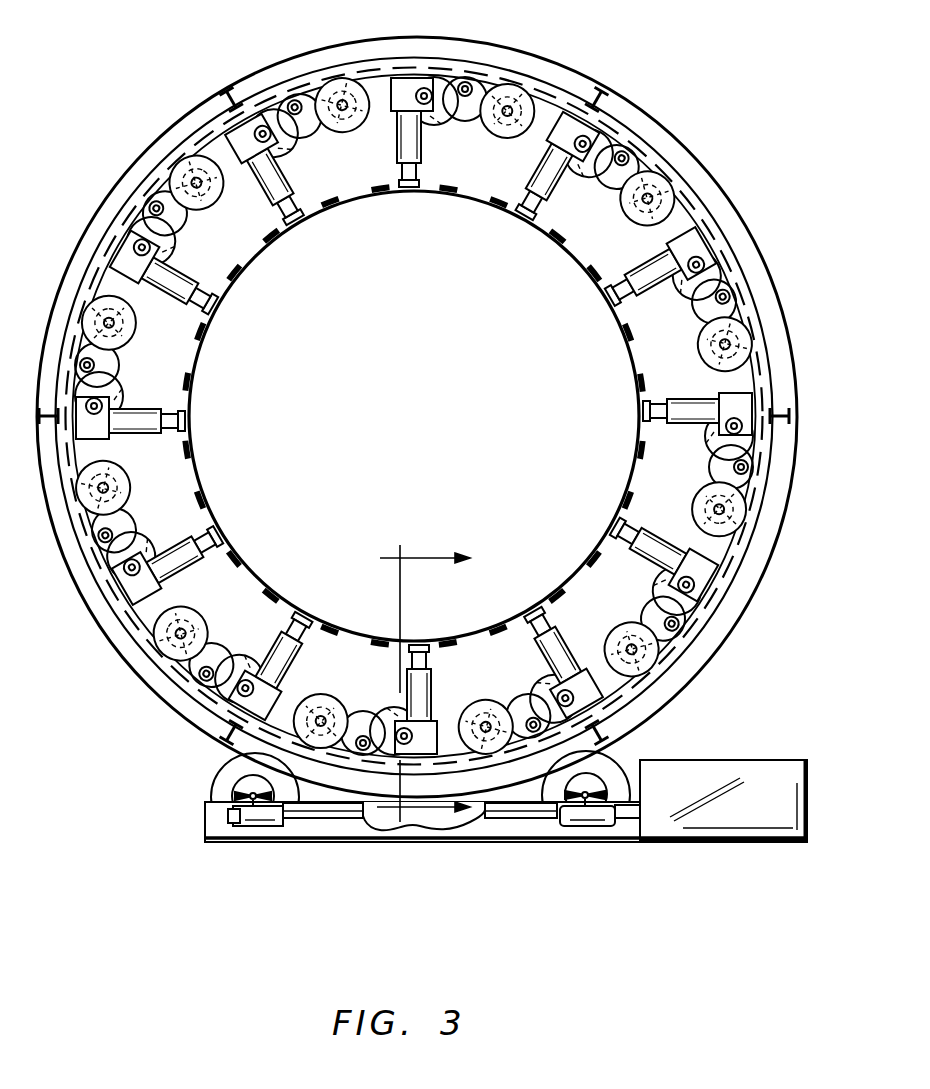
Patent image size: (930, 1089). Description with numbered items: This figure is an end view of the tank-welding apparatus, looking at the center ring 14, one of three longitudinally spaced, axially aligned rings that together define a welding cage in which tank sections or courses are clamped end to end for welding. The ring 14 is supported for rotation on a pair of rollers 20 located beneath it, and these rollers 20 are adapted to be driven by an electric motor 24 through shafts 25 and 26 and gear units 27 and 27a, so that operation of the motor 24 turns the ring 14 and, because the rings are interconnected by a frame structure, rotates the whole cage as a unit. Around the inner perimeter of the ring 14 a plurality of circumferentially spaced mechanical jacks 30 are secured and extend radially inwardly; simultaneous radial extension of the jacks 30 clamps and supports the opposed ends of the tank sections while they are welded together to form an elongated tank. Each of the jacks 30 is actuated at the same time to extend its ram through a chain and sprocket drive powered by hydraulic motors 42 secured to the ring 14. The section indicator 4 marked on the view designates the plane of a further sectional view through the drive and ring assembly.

The center ring 14 is at (630, 79).
The mechanical jacks 30 is at (357, 160).
The hydraulic motors 42 is at (680, 213).
The rollers 20 is at (218, 783).
The electric motor 24 is at (775, 812).
The shaft 25 is at (620, 825).
The shaft 26 is at (315, 818).
The gear unit 27 is at (588, 825).
The gear unit 27a is at (250, 818).
The section line 4- 4 is at (422, 683).